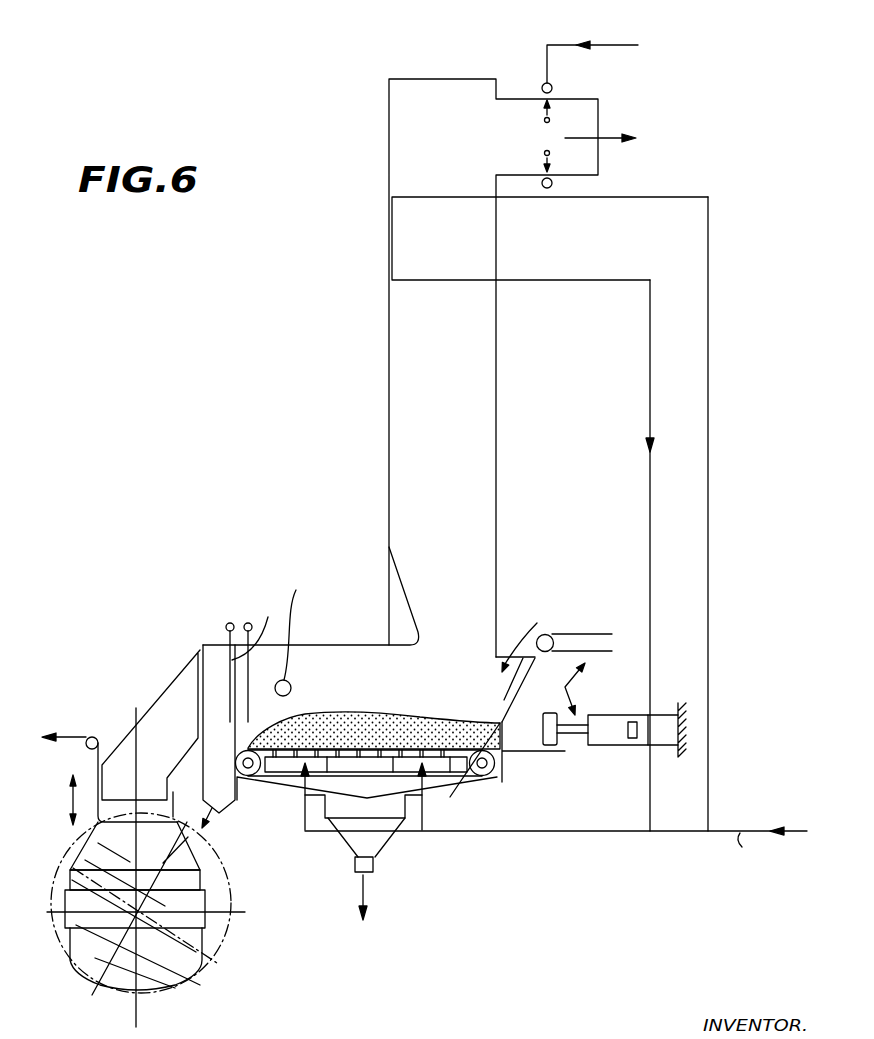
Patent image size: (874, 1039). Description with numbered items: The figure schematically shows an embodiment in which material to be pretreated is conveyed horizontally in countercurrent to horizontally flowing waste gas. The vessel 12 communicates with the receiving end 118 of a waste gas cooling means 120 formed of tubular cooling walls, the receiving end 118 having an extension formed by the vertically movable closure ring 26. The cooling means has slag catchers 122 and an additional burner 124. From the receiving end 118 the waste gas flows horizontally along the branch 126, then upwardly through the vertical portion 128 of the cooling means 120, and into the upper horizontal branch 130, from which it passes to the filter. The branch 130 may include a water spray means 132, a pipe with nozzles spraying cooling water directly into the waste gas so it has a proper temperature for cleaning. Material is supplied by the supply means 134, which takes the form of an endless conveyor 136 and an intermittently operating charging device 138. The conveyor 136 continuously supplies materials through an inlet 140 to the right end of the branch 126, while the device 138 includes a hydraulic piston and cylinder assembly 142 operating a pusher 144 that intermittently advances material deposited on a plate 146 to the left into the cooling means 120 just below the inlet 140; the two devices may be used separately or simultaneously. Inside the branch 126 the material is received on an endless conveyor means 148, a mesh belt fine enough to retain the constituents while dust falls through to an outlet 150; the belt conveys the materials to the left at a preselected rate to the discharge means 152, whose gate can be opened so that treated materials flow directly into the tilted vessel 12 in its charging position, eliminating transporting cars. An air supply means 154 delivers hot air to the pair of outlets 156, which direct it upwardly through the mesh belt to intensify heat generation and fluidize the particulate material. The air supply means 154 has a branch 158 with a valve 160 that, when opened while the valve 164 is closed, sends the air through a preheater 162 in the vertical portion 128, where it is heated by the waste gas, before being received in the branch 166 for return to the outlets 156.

The vessel 12 is at (82, 973).
The vertically movable closure ring 26 is at (192, 806).
The receiving end 118 is at (108, 795).
The waste gas cooling means 120 is at (378, 404).
The slag catchers 122 is at (227, 635).
The additional burner 124 is at (292, 682).
The branch 126 is at (396, 690).
The vertical portion 128 is at (440, 401).
The upper horizontal branch 130 is at (612, 86).
The water spray means 132 is at (545, 60).
The supply means 134 is at (547, 689).
The endless conveyor 136 is at (610, 620).
The intermittently operating charging device 138 is at (617, 692).
The inlet 140 is at (513, 677).
The hydraulic piston and cylinder assembly 142 is at (607, 746).
The pusher 144 is at (534, 728).
The plate 146 is at (516, 751).
The endless conveyor means 148 is at (452, 772).
The outlet 150 is at (394, 858).
The discharge means 152 is at (228, 811).
The air supply means 154 is at (723, 830).
The outlets 156 is at (304, 800).
The branch 158 is at (708, 502).
The valve 160 is at (716, 797).
The preheater 162 is at (518, 246).
The valve 164 is at (676, 838).
The branch 166 is at (649, 383).